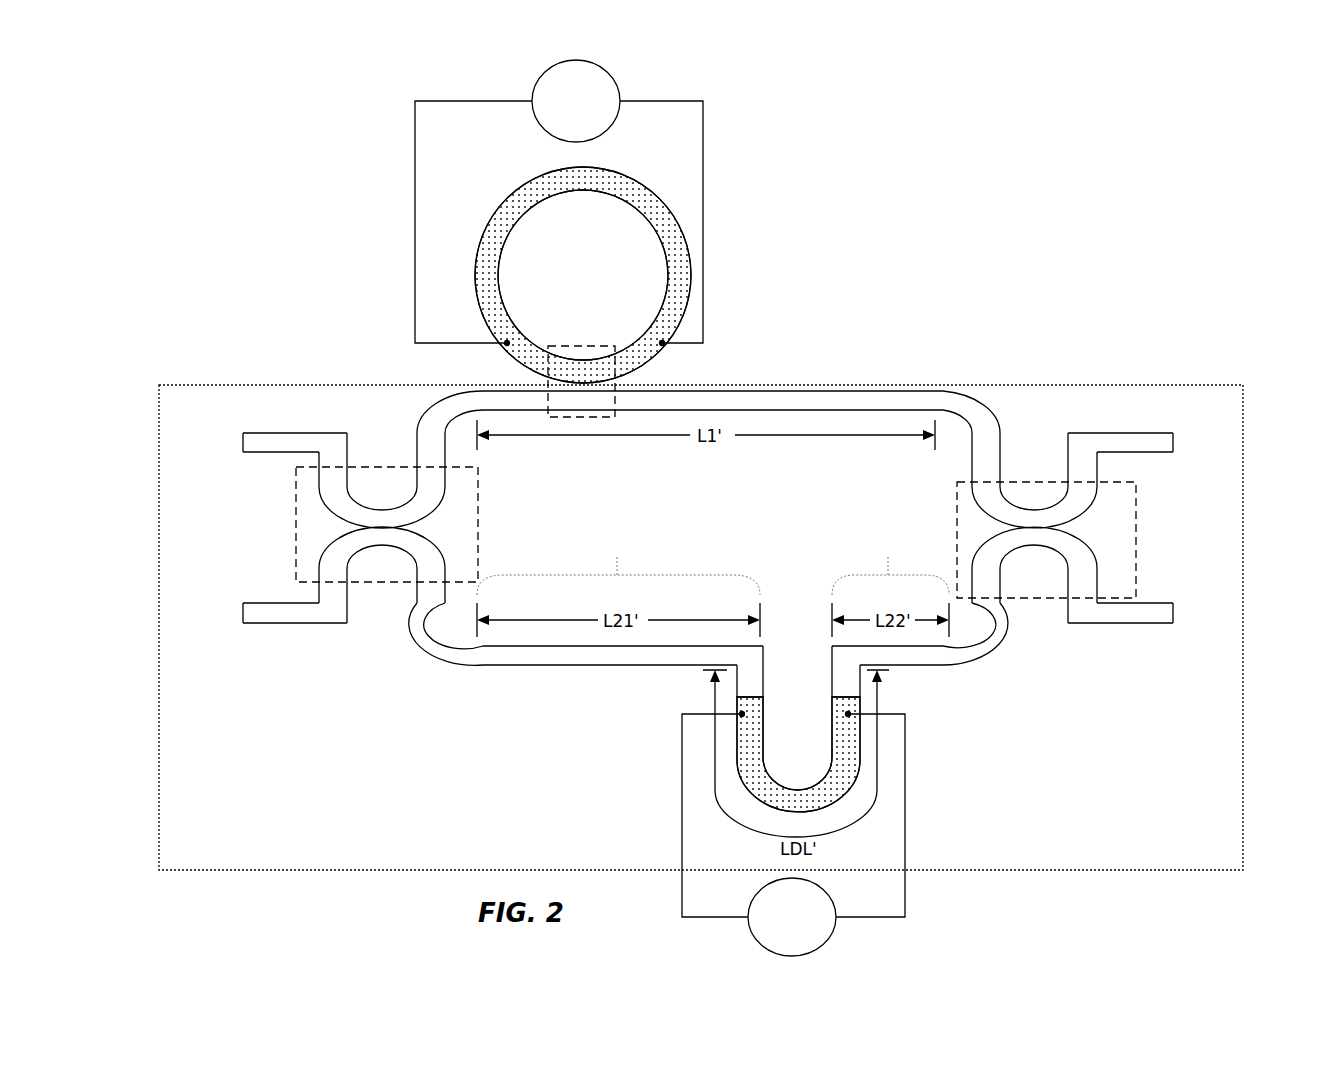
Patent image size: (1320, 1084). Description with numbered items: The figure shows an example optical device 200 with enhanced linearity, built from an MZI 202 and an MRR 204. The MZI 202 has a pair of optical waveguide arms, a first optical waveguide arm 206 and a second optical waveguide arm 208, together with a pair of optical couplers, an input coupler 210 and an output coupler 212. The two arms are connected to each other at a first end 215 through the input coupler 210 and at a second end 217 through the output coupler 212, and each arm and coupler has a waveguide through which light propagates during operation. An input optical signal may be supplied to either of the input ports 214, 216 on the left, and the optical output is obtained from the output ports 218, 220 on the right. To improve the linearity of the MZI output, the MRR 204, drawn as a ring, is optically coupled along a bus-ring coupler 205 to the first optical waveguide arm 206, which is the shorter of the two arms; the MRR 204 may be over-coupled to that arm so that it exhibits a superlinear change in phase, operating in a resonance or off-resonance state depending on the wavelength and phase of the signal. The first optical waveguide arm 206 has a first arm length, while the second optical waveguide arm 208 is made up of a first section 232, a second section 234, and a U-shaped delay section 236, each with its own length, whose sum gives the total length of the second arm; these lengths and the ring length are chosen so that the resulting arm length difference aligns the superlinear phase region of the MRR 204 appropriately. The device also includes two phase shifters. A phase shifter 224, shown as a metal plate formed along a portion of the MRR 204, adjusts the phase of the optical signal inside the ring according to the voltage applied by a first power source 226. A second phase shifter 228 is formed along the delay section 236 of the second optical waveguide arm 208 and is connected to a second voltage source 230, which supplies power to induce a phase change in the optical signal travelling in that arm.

The optical device 200 is at (1020, 130).
The MZI 202 is at (1104, 390).
The MRR 204 is at (647, 352).
The bus-ring coupler 205 is at (585, 345).
The first optical waveguide arm 206 is at (820, 393).
The second optical waveguide arm 208 is at (608, 655).
The input coupler 210 is at (386, 585).
The output coupler 212 is at (1045, 603).
The input port 214 is at (241, 437).
The first end 215 is at (381, 433).
The input port 216 is at (241, 610).
The second end 217 is at (1038, 434).
The output port 218 is at (1177, 440).
The output port 220 is at (1177, 610).
The phase shifter 224 is at (527, 188).
The first power source 226 is at (600, 68).
The phase shifter 228 is at (757, 715).
The second voltage source 230 is at (752, 905).
The first section 232 is at (618, 563).
The second section 234 is at (890, 563).
The delay section 236 is at (843, 687).